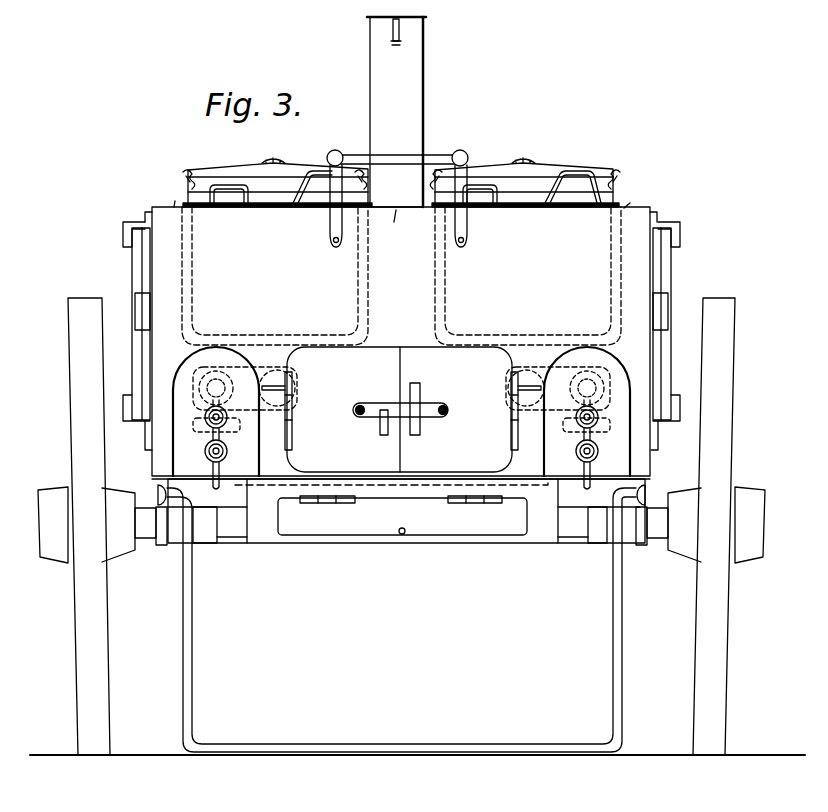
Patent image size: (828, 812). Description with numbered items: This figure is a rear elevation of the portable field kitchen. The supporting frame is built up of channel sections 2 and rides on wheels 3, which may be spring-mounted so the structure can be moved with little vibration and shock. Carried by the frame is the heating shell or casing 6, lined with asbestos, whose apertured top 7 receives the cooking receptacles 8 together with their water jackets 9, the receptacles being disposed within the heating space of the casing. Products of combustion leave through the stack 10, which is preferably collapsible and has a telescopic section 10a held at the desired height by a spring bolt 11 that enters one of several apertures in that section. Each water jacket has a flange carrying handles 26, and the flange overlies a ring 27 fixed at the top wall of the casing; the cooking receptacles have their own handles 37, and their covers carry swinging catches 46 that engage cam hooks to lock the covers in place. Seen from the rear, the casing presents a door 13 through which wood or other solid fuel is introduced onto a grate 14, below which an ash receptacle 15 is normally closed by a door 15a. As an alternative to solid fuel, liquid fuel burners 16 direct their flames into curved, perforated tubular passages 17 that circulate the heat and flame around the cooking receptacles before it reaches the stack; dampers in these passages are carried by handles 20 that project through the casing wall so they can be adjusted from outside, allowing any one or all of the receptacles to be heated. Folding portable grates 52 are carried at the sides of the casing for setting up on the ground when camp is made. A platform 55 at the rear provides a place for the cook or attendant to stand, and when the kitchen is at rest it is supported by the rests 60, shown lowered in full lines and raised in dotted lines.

The channel sections 2 is at (156, 492).
The wheels 3 is at (401, 526).
The heating shell or casing 6 is at (401, 343).
The apertured top 7 is at (400, 223).
The cooking receptacles 8 is at (455, 276).
The water jackets 9 is at (183, 273).
The stack 10 is at (397, 132).
The telescopic section 10a is at (426, 17).
The spring bolt 11 is at (401, 42).
The door 13 is at (399, 409).
The grate 14 is at (418, 485).
The ash receptacle 15 is at (540, 547).
The door 15a is at (402, 515).
The liquid fuel burners 16 is at (232, 425).
The tubular passages 17 is at (265, 348).
The handles 20 is at (295, 389).
The handles 26 is at (228, 185).
The ring 27 is at (637, 200).
The handles 37 is at (322, 170).
The swinging catches 46 is at (183, 180).
The folding portable grates 52 is at (134, 372).
The platform 55 is at (516, 480).
The rests 60 is at (195, 631).